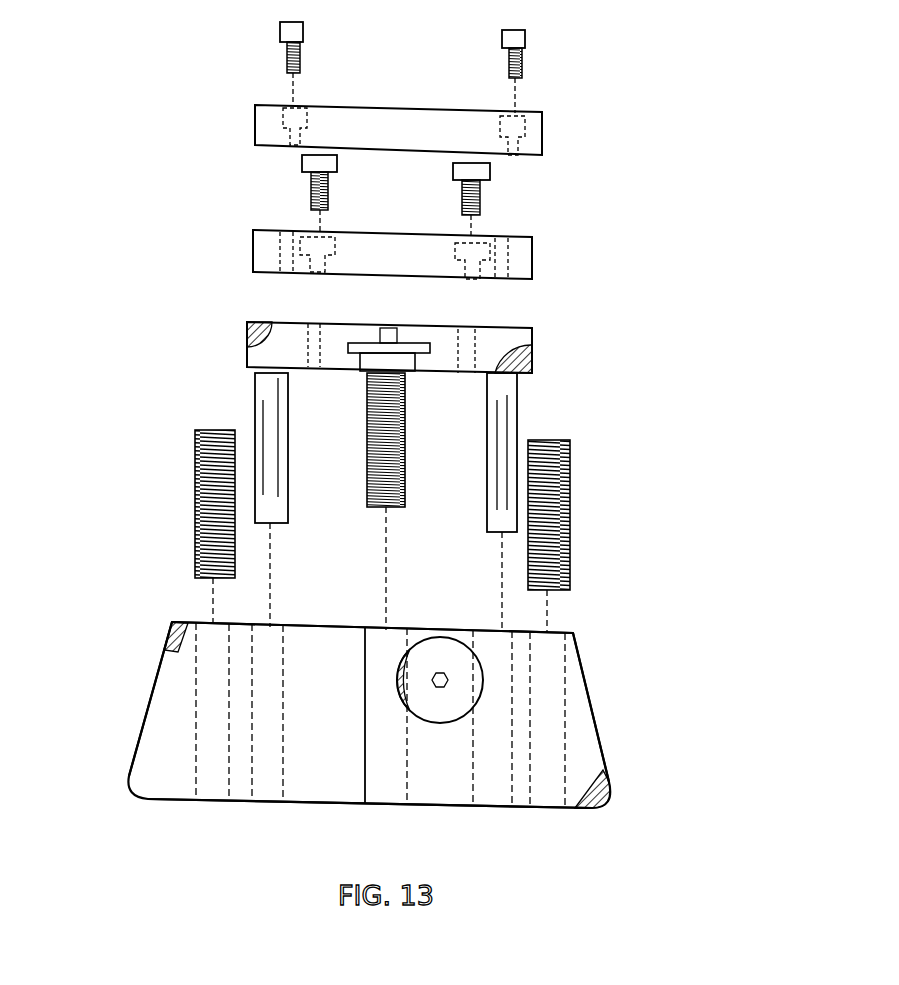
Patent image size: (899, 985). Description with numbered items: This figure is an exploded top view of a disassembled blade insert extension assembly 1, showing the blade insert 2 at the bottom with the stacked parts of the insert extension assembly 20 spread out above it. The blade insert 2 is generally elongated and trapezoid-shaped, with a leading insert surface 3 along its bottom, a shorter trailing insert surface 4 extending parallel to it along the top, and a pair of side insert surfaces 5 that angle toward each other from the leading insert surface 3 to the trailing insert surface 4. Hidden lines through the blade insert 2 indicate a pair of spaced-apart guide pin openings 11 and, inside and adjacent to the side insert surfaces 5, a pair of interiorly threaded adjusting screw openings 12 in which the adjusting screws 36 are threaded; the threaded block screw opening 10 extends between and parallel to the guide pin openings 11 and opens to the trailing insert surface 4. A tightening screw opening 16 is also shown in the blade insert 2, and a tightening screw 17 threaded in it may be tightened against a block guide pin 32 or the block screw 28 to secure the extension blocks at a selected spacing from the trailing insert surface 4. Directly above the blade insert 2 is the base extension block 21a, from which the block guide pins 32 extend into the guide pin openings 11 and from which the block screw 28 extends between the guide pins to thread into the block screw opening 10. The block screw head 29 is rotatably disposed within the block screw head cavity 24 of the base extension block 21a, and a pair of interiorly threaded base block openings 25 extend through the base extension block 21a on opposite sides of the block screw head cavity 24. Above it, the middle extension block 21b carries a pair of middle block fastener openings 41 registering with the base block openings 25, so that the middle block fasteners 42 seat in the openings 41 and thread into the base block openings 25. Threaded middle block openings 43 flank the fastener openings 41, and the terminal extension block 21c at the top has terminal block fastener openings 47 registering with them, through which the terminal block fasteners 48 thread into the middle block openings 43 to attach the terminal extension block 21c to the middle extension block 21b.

The blade insert extension assembly 1 is at (88, 105).
The blade insert 2 is at (140, 682).
The leading insert surface 3 is at (340, 805).
The trailing insert surface 4 is at (345, 630).
The side insert surfaces 5 is at (147, 725).
The block screw opening 10 is at (370, 790).
The guide pin openings 11 is at (282, 768).
The adjusting screw openings 12 is at (200, 770).
The tightening screw opening 16 is at (440, 722).
The tightening screw 17 is at (440, 652).
The insert extension assembly 20 is at (548, 134).
The base extension block 21a is at (247, 345).
The middle extension block 21b is at (253, 255).
The terminal extension block 21c is at (255, 128).
The block screw head cavity 24 is at (430, 372).
The base block openings 25 is at (310, 325).
The block screw 28 is at (370, 488).
The block screw head 29 is at (357, 370).
The block guide pins 32 is at (257, 392).
The adjusting screw 36 is at (195, 462).
The middle block fastener openings 41 is at (445, 268).
The middle block fasteners 42 is at (455, 190).
The middle block openings 43 is at (275, 225).
The terminal block fastener openings 47 is at (480, 115).
The terminal block fasteners 48 is at (500, 40).